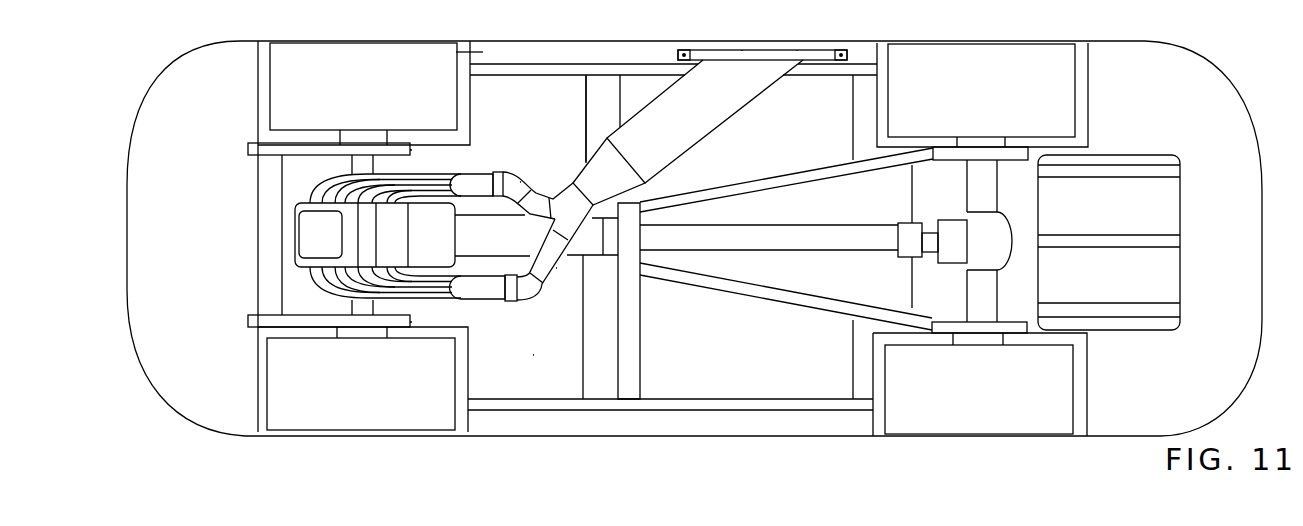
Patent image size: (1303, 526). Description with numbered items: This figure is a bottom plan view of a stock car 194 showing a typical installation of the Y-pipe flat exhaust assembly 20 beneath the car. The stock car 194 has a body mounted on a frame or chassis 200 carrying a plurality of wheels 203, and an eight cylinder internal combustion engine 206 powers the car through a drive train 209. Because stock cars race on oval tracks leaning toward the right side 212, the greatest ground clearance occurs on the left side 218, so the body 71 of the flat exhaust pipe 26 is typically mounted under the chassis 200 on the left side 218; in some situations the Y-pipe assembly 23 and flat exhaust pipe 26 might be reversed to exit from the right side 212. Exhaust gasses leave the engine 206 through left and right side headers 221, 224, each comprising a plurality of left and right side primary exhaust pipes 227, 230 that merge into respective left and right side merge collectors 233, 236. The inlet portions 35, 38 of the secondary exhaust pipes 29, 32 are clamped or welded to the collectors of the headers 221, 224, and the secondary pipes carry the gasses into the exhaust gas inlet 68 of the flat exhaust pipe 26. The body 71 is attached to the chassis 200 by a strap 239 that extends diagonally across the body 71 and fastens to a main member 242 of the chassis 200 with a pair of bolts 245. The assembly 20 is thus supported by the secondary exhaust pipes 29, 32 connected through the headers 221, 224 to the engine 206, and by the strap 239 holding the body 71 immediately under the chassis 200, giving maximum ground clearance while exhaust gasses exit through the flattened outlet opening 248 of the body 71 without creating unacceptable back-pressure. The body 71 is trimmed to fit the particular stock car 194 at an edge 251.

The stock car 194 is at (1163, 39).
The chassis 200 is at (521, 39).
The left side 218 is at (579, 42).
The right side 212 is at (613, 435).
The wheels 203 is at (673, 238).
The main member 242 is at (456, 52).
The left side header 221 is at (437, 160).
The right side header 224 is at (431, 309).
The Y-pipe flat exhaust assembly 20 is at (584, 93).
The flat exhaust pipe 26 is at (708, 163).
The drive train 209 is at (812, 226).
The internal combustion engine 206 is at (295, 238).
The left side primary exhaust pipes 227 is at (318, 195).
The right side primary exhaust pipes 230 is at (318, 290).
The left side merge collector 233 is at (478, 171).
The right side merge collector 236 is at (473, 300).
The secondary exhaust pipe 32 is at (511, 201).
The inlet portion 38 is at (521, 182).
The inlet portion 35 is at (527, 297).
The secondary exhaust pipe 29 is at (557, 270).
The Y-pipe assembly 23 is at (533, 356).
The exhaust gas inlet 68 is at (583, 163).
The body 71 is at (742, 118).
The strap 239 is at (746, 60).
The bolts 245 is at (686, 50).
The edge 251 is at (742, 48).
The flattened outlet opening 248 is at (797, 48).